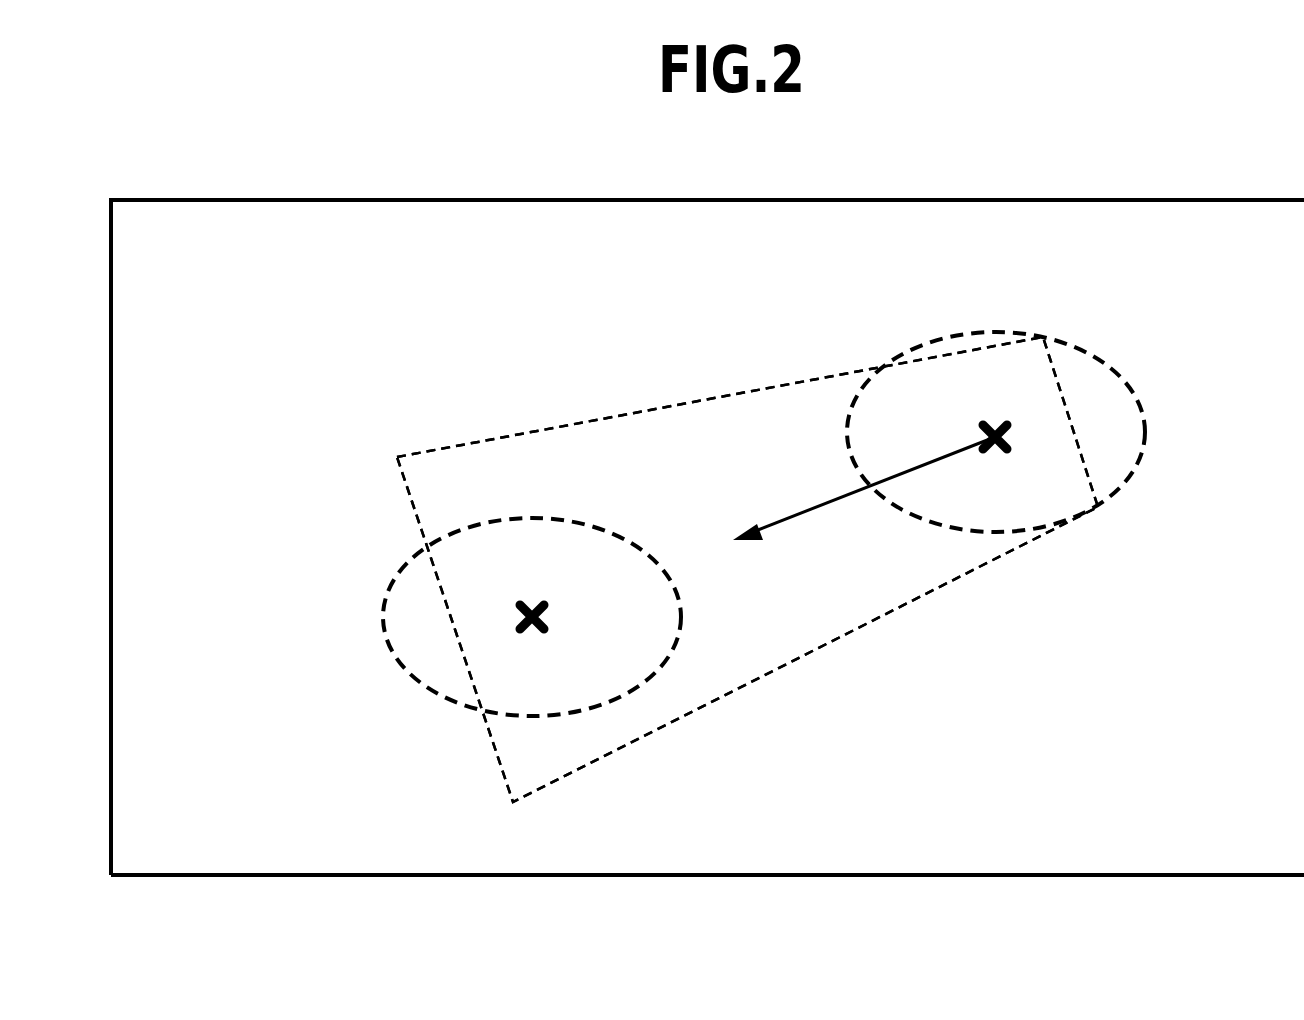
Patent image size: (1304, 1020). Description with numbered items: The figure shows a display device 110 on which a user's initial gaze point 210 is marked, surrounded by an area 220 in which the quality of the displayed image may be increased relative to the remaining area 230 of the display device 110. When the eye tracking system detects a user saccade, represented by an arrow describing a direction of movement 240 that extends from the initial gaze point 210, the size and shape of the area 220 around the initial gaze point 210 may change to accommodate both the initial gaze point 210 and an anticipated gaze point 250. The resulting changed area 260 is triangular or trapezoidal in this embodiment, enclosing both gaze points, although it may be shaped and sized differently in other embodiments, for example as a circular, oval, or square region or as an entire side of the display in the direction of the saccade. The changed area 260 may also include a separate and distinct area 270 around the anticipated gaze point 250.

The display device 110 is at (988, 198).
The initial gaze point 210 is at (995, 437).
The area around the initial gaze point 220 is at (1040, 528).
The remaining area 230 is at (420, 292).
The direction of movement 240 is at (790, 512).
The anticipated gaze point 250 is at (532, 617).
The changed area 260 is at (857, 633).
The area around the anticipated gaze point 270 is at (402, 667).